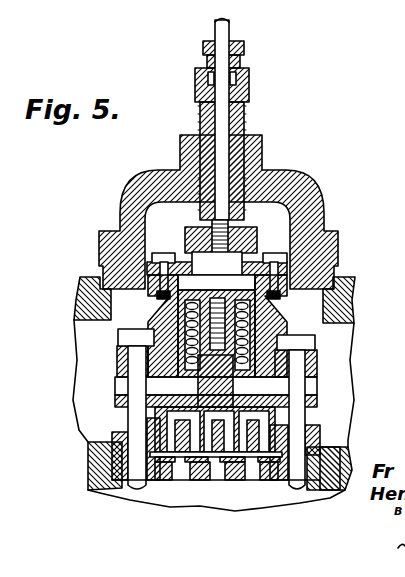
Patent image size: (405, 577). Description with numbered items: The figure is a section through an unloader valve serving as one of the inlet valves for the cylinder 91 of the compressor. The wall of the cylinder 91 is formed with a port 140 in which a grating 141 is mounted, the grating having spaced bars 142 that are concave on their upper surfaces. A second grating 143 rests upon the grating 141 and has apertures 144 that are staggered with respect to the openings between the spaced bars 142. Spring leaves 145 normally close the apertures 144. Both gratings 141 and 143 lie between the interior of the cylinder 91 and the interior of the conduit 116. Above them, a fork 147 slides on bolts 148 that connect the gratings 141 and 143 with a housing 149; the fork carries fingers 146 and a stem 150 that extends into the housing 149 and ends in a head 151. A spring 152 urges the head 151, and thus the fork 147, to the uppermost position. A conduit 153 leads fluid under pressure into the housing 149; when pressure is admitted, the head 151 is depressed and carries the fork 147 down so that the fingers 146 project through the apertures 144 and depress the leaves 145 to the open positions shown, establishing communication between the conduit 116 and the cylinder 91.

The conduit 116 is at (350, 298).
The conduit 153 is at (218, 117).
The head 151 is at (258, 262).
The stem 150 is at (172, 322).
The housing 149 is at (274, 324).
The spring 152 is at (262, 342).
The bolts 148 is at (133, 360).
The fork 147 is at (282, 392).
The fingers 146 is at (145, 420).
The apertures 144 is at (300, 402).
The second grating 143 is at (305, 430).
The spring leaves 145 is at (192, 462).
The spaced bars 142 is at (227, 458).
The port 140 is at (302, 488).
The grating 141 is at (325, 452).
The cylinder 91 is at (253, 495).